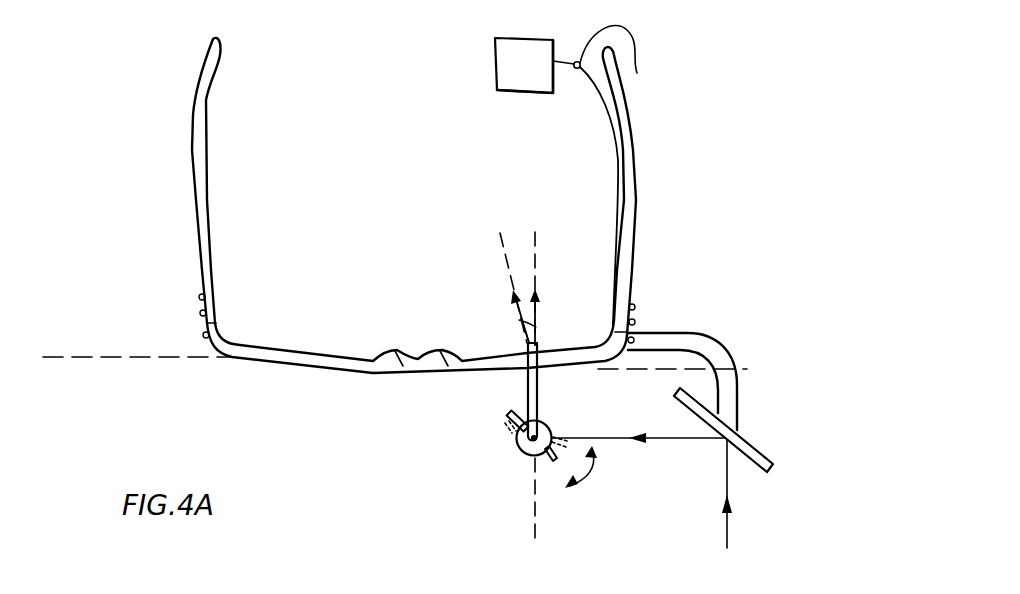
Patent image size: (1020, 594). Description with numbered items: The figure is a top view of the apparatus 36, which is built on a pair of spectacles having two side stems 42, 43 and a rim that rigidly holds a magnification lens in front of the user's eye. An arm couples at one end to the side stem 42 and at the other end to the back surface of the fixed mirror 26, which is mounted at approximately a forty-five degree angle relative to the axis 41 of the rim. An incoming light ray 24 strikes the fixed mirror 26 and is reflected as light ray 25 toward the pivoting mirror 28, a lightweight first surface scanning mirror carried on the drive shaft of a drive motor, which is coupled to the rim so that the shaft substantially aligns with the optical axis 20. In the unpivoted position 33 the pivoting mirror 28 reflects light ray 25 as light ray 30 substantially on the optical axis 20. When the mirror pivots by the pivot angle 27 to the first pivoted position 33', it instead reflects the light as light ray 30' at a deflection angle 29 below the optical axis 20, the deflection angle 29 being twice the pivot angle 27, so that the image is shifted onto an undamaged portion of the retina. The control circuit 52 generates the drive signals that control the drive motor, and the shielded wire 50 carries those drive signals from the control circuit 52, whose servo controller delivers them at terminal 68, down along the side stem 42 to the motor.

The apparatus 36 is at (152, 112).
The side stem 43 is at (201, 272).
The side stem 42 is at (633, 200).
The control circuit 52 is at (495, 58).
The shielded wire 50 is at (614, 180).
The terminal 68 is at (637, 73).
The optical axis 20 is at (535, 268).
The light ray 30 is at (566, 313).
The light ray 30' is at (480, 288).
The deflection angle 29 is at (531, 326).
The axis 41 is at (119, 355).
The pivoting mirror 28 is at (515, 410).
The unpivoted position 33 is at (500, 440).
The first pivoted position 33' is at (504, 481).
The pivot angle 27 is at (593, 473).
The light ray 25 is at (690, 440).
The light ray 24 is at (729, 530).
The fixed mirror 26 is at (773, 462).